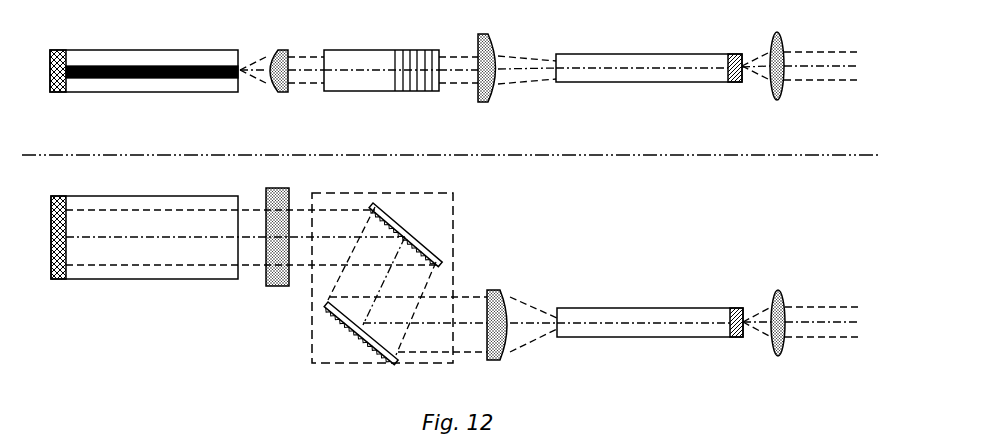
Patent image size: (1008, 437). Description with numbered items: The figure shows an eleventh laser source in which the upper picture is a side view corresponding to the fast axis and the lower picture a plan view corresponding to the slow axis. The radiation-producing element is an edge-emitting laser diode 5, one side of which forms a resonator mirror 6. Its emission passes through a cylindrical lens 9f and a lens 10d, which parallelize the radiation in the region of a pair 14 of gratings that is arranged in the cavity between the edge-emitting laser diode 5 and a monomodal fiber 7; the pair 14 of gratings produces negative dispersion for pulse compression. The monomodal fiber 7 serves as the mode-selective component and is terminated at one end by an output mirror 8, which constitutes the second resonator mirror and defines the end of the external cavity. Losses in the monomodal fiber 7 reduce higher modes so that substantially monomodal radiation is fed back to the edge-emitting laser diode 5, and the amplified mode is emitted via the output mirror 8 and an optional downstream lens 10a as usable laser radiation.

The edge-emitting laser diode 5 is at (163, 87).
The resonator mirror 6 is at (62, 92).
The cylindrical lens 9f is at (277, 62).
The pair of gratings 14 is at (347, 80).
The lens 10d is at (495, 93).
The monomodal fiber 7 is at (600, 60).
The output mirror 8 is at (733, 82).
The lens 10a is at (780, 40).